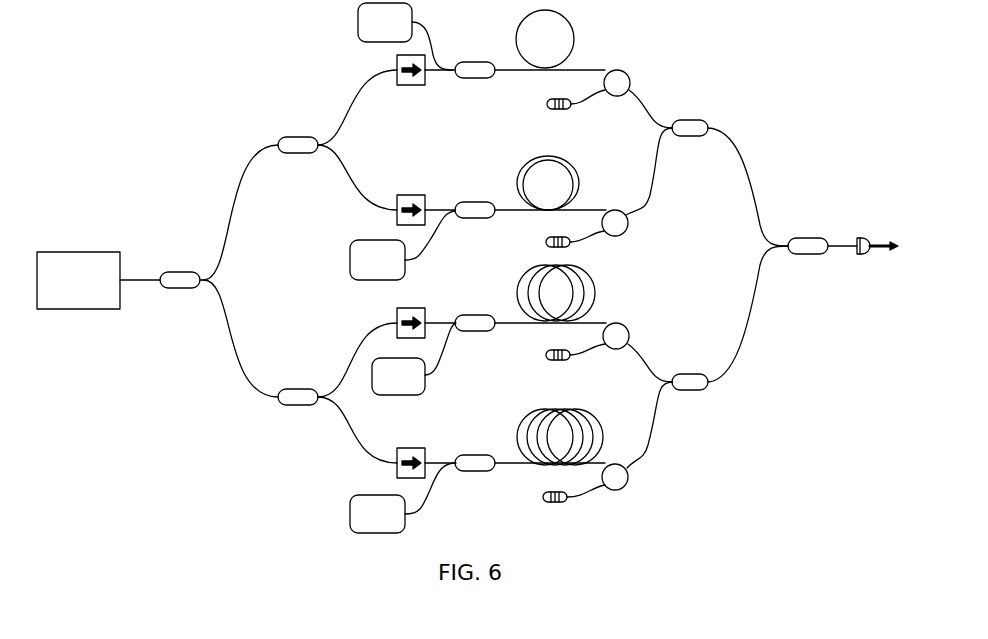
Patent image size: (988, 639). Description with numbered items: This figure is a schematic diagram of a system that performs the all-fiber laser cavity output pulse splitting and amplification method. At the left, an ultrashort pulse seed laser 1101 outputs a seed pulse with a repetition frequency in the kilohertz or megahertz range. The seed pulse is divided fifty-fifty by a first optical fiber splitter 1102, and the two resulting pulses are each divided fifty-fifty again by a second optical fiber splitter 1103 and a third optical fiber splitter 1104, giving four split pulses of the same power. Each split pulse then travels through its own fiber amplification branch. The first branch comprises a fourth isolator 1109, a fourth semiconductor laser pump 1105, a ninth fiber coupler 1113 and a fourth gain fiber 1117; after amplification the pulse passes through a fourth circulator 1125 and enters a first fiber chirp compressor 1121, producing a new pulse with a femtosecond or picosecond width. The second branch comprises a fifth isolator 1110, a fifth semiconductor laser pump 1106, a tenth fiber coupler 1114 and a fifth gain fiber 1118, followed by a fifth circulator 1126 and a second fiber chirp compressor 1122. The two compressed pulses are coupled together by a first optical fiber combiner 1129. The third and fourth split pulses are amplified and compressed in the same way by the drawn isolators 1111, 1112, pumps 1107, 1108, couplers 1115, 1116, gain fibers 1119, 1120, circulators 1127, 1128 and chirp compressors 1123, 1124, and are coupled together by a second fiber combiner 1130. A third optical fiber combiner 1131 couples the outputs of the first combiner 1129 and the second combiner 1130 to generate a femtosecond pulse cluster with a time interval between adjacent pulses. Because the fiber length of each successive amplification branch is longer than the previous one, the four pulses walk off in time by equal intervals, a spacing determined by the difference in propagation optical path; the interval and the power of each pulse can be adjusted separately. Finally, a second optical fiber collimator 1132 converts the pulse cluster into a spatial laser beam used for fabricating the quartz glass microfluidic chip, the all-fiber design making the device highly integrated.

The ultrashort pulse seed laser 1101 is at (70, 263).
The first optical fiber splitter 1102 is at (182, 283).
The second optical fiber splitter 1103 is at (299, 148).
The third optical fiber splitter 1104 is at (298, 399).
The fourth semiconductor laser pump 1105 is at (370, 23).
The fifth semiconductor laser pump 1106 is at (358, 254).
The third pump source 1107 is at (375, 361).
The fourth pump source 1108 is at (352, 514).
The fourth isolator 1109 is at (408, 86).
The fifth isolator 1110 is at (406, 195).
The third isolator 1111 is at (398, 312).
The fourth isolator 1112 is at (400, 448).
The ninth fiber coupler 1113 is at (474, 72).
The tenth fiber coupler 1114 is at (473, 217).
The third wavelength division multiplexer 1115 is at (473, 330).
The fourth wavelength division multiplexer 1116 is at (466, 472).
The fourth gain fiber 1117 is at (513, 18).
The fifth gain fiber 1118 is at (517, 181).
The third gain fiber 1119 is at (517, 292).
The fourth gain fiber 1120 is at (517, 432).
The first fiber chirp compressor 1121 is at (547, 105).
The second fiber chirp compressor 1122 is at (546, 243).
The third fiber connector 1123 is at (546, 356).
The fourth fiber connector 1124 is at (546, 499).
The fourth circulator 1125 is at (625, 73).
The fifth circulator 1126 is at (627, 230).
The third circulator 1127 is at (628, 327).
The fourth circulator 1128 is at (627, 488).
The first optical fiber combiner 1129 is at (690, 137).
The second fiber combiner 1130 is at (690, 391).
The third optical fiber combiner 1131 is at (826, 238).
The second optical fiber collimator 1132 is at (862, 257).